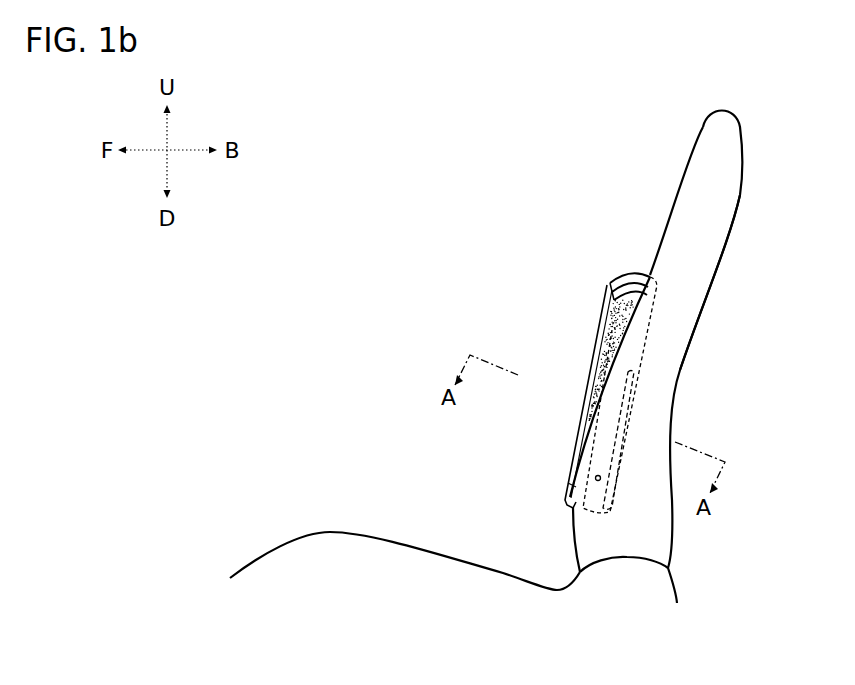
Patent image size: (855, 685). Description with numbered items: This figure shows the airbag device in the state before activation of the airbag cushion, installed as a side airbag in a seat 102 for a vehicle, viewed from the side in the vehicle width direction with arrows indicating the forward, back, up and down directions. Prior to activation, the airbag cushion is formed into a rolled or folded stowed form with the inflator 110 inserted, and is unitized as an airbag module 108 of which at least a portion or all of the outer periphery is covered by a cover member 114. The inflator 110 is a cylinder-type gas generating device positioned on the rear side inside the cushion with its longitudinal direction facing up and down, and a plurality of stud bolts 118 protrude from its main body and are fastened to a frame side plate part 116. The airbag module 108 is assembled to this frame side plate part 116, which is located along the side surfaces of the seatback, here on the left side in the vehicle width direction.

The seat 102 is at (730, 108).
The airbag module 108 is at (620, 273).
The inflator 110 is at (628, 373).
The cover member 114 is at (593, 358).
The frame side plate part 116 is at (717, 249).
The stud bolts 118 is at (605, 414).